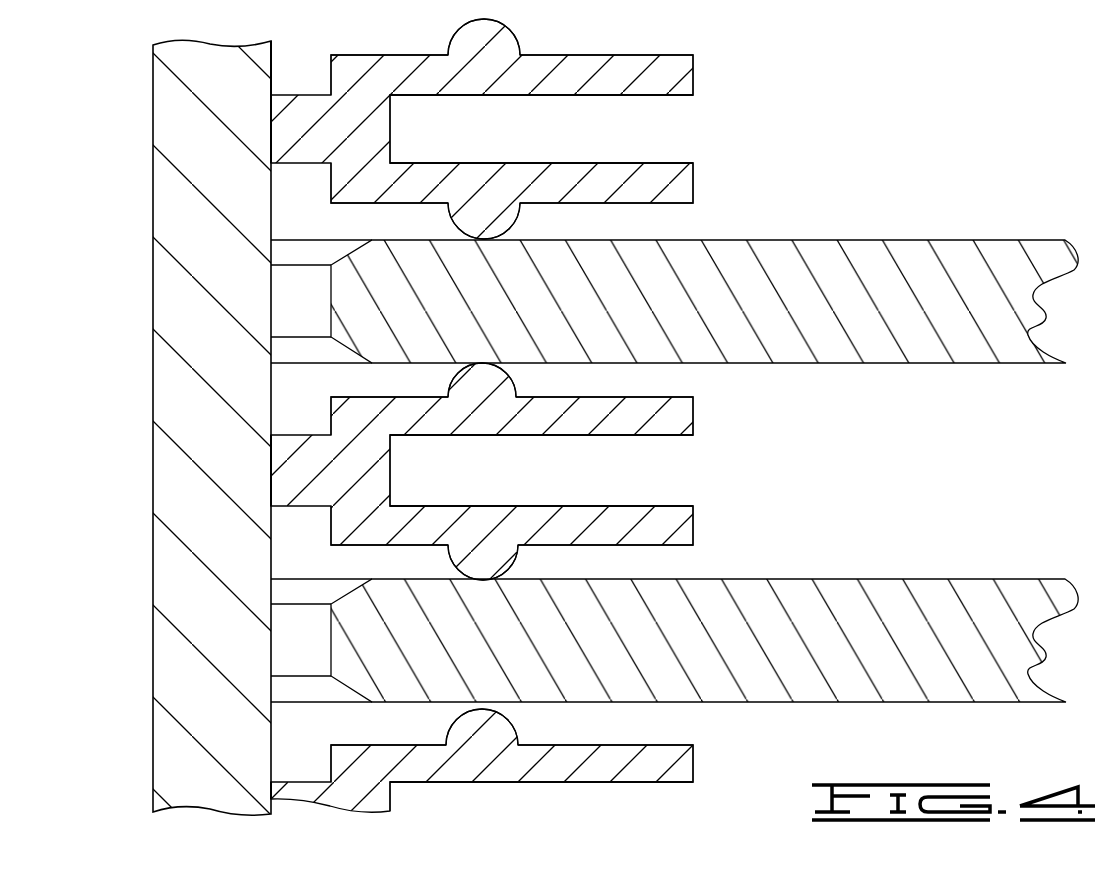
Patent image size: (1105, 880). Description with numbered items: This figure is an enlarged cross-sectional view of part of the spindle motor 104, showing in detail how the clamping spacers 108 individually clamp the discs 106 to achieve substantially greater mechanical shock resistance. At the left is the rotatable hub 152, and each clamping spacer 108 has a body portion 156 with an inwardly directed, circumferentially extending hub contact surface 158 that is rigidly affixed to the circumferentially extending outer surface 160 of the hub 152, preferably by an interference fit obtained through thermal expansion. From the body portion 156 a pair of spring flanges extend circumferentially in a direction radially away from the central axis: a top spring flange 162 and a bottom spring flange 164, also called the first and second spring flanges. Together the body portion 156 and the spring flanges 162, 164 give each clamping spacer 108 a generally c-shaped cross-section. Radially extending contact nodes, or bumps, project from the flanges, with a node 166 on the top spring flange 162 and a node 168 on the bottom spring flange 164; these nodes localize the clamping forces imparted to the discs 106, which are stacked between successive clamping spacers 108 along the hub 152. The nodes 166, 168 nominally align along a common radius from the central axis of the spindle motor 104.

The spindle motor 104 is at (960, 92).
The discs 106 is at (1024, 243).
The clamping spacer 108 is at (686, 168).
The rotatable hub 152 is at (185, 400).
The body portion 156 is at (380, 126).
The hub contact surface 158 is at (282, 125).
The outer surface 160 is at (283, 42).
The top spring flange 162 is at (694, 78).
The bottom spring flange 164 is at (692, 192).
The contact node 166 is at (497, 45).
The contact node 168 is at (500, 215).